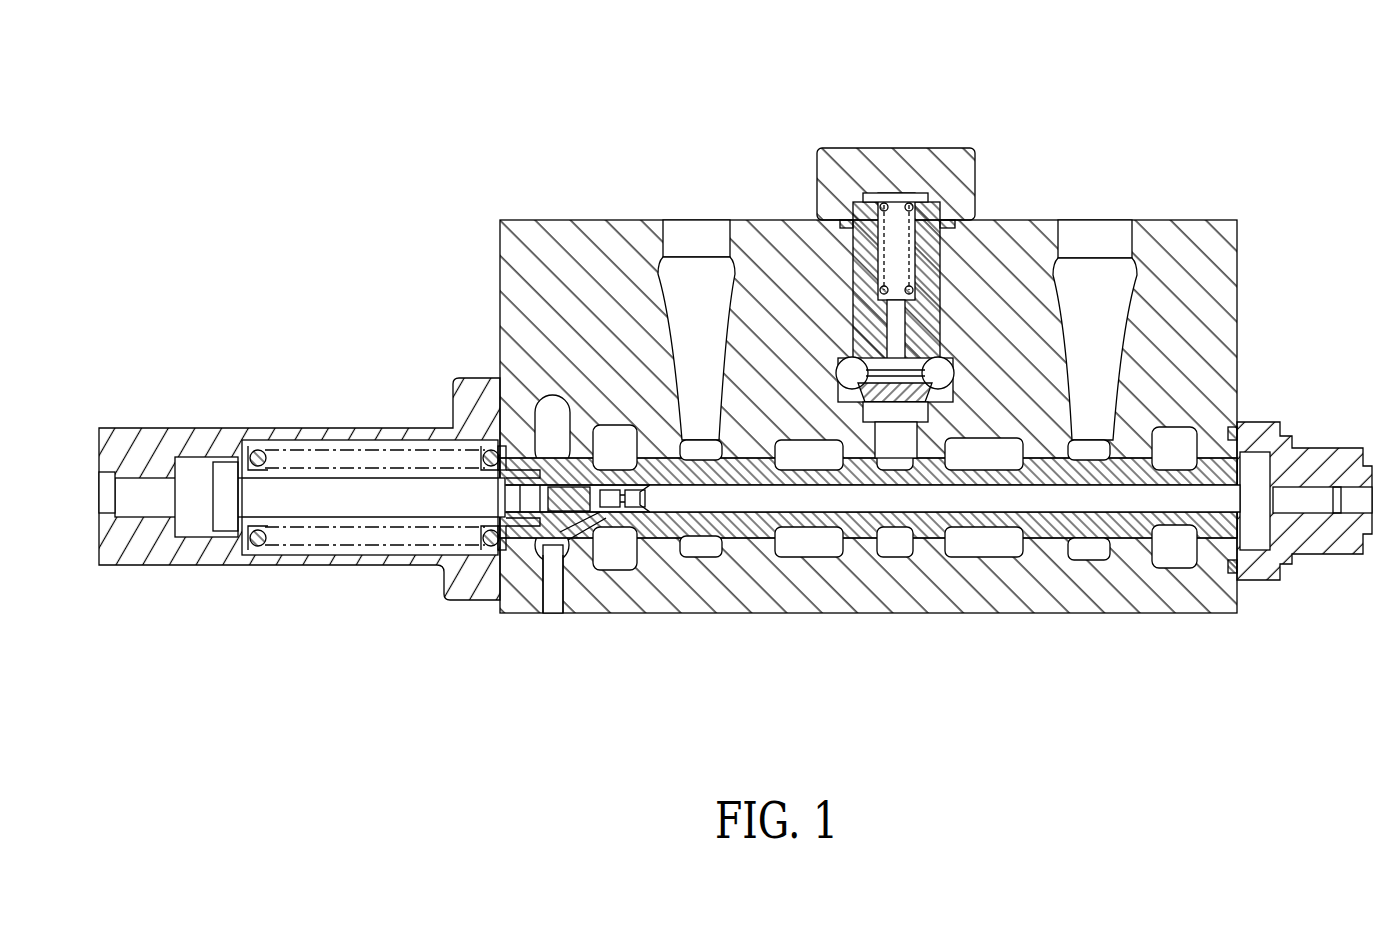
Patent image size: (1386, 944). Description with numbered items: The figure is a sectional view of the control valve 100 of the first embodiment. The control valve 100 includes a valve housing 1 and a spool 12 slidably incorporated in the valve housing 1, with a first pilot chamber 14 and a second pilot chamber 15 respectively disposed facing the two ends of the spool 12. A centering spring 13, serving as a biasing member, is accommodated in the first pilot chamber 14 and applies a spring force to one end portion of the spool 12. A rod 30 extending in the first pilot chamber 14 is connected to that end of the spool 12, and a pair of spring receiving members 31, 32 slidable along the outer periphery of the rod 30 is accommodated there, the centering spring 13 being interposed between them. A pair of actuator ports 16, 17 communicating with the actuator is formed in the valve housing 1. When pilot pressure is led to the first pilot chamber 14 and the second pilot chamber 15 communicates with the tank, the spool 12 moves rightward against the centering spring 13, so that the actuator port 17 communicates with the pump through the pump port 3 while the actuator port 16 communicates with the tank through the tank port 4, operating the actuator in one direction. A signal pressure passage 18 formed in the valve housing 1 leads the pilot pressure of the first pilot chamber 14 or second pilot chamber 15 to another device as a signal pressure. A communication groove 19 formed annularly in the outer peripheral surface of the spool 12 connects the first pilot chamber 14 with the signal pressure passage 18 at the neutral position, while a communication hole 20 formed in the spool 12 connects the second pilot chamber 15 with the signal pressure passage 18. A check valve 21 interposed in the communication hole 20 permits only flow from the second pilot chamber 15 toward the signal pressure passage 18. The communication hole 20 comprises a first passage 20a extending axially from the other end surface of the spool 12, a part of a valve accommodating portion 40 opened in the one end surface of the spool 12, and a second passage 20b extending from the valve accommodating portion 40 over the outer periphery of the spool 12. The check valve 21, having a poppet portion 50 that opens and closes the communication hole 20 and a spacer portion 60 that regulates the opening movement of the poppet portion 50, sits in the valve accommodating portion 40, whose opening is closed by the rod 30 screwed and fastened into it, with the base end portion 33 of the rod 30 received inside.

The control valve 100 is at (1032, 152).
The valve housing 1 is at (1212, 222).
The pump port 3 is at (803, 553).
The tank port 4 is at (606, 560).
The spool 12 is at (1100, 527).
The centering spring 13 is at (264, 546).
The first pilot chamber 14 is at (327, 447).
The second pilot chamber 15 is at (1257, 470).
The actuator port 16 is at (695, 243).
The actuator port 17 is at (1106, 243).
The signal pressure passage 18 is at (553, 452).
The communication groove 19 is at (532, 562).
The communication hole 20 is at (905, 500).
The first passage 20a is at (730, 547).
The second passage 20b is at (570, 555).
The check valve 21 is at (603, 606).
The rod 30 is at (388, 512).
The spring receiving member 31 is at (492, 546).
The spring receiving member 32 is at (275, 532).
The base end portion 33 is at (497, 450).
The valve accommodating portion 40 is at (528, 455).
The poppet portion 50 is at (628, 515).
The spacer portion 60 is at (580, 515).